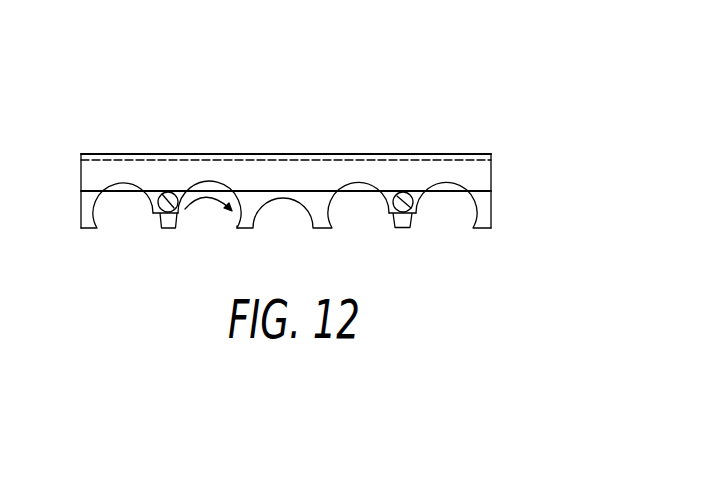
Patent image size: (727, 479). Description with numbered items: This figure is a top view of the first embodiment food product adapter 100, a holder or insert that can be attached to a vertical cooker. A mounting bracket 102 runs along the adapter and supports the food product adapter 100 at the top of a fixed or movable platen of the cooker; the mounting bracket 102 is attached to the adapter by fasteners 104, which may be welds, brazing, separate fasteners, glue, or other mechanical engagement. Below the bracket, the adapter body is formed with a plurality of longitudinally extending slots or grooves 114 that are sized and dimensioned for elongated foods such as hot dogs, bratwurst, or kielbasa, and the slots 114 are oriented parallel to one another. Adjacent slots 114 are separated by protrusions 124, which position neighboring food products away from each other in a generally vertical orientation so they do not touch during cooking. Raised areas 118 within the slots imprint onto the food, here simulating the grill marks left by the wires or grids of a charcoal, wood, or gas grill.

The food product adapter 100 is at (157, 110).
The mounting bracket 102 is at (483, 175).
The fasteners 104 is at (158, 209).
The slots or grooves 114 is at (288, 222).
The raised areas 118 is at (219, 204).
The protrusions 124 is at (247, 213).